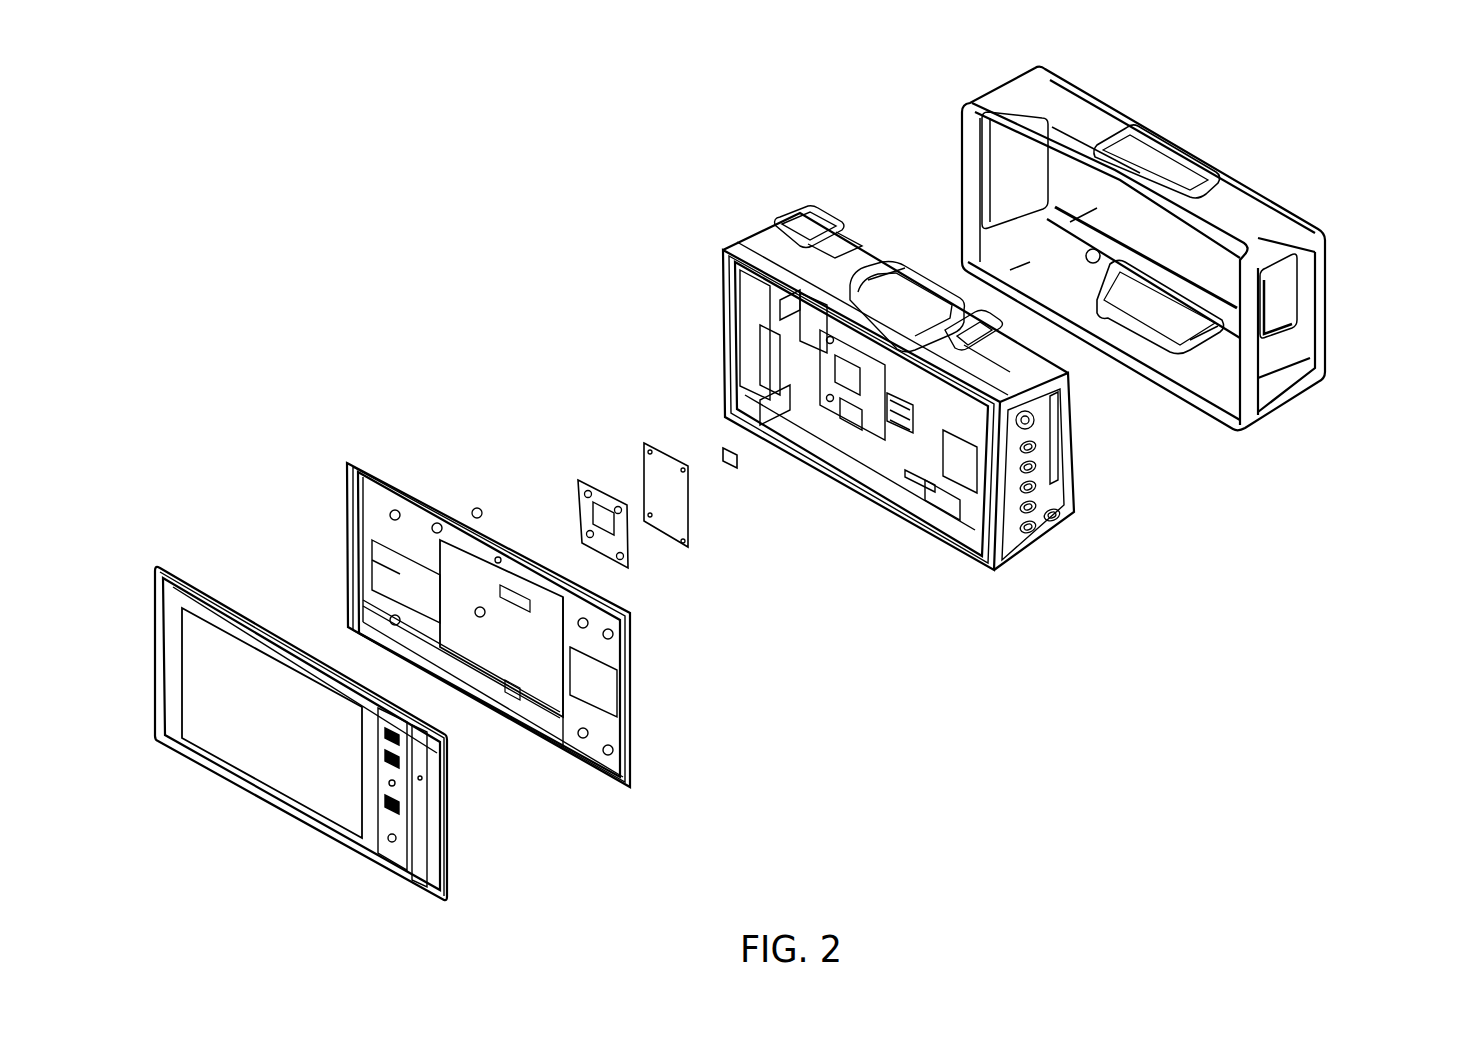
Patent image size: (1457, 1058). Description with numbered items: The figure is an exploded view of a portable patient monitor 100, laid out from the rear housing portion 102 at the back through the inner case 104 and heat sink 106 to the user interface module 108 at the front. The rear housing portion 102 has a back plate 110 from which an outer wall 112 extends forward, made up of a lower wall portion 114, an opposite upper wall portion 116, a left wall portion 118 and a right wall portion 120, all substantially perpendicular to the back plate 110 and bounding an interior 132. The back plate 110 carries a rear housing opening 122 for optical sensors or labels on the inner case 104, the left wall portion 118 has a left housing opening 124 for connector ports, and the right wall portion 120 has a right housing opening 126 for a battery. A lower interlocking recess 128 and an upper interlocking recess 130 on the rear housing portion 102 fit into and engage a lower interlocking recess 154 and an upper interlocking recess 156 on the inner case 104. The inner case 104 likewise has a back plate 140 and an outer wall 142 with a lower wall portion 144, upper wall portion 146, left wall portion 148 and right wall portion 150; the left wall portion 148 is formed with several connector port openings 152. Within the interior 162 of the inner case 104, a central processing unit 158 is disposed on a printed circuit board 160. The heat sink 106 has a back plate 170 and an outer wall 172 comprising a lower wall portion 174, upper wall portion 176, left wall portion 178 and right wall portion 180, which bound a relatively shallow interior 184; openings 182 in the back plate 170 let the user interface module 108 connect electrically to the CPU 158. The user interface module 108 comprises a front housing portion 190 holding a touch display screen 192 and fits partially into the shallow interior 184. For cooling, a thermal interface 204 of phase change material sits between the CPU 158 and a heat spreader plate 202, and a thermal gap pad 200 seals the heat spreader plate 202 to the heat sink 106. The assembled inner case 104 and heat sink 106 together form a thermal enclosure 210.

The portable patient monitor 100 is at (262, 185).
The rear housing portion 102 is at (1143, 274).
The inner case 104 is at (880, 459).
The heat sink 106 is at (492, 653).
The user interface module 108 is at (317, 719).
The back plate 110 is at (1304, 272).
The outer wall 112 is at (1289, 242).
The lower wall portion 114 is at (1187, 362).
The upper wall portion 116 is at (1062, 107).
The left wall portion 118 is at (1255, 383).
The right wall portion 120 is at (977, 175).
The rear housing opening 122 is at (1293, 318).
The left housing opening 124 is at (1262, 350).
The right housing opening 126 is at (1045, 178).
The lower interlocking recess 128 is at (1142, 333).
The upper interlocking recess 130 is at (1153, 168).
The interior 132 is at (1072, 237).
The back plate 140 is at (1072, 432).
The outer wall 142 is at (1048, 535).
The lower wall portion 144 is at (960, 543).
The upper wall portion 146 is at (798, 258).
The left wall portion 148 is at (1007, 513).
The right wall portion 150 is at (733, 323).
The connector port openings 152 is at (1060, 455).
The lower interlocking recess 154 is at (922, 483).
The upper interlocking recess 156 is at (903, 297).
The central processing unit (CPU) 158 is at (847, 390).
The printed circuit board (PCB) 160 is at (817, 398).
The interior 162 is at (767, 379).
The back plate 170 is at (468, 645).
The outer wall 172 is at (633, 658).
The lower wall portion 174 is at (593, 767).
The upper wall portion 176 is at (477, 513).
The left wall portion 178 is at (638, 760).
The right wall portion 180 is at (353, 595).
The openings 182 is at (543, 687).
The shallow interior 184 is at (400, 573).
The front housing portion 190 is at (192, 582).
The touch display screen 192 is at (275, 755).
The thermal gap pad 200 is at (623, 543).
The heat spreader plate 202 is at (663, 500).
The thermal interface 204 is at (737, 466).
The thermal enclosure 210 is at (847, 181).